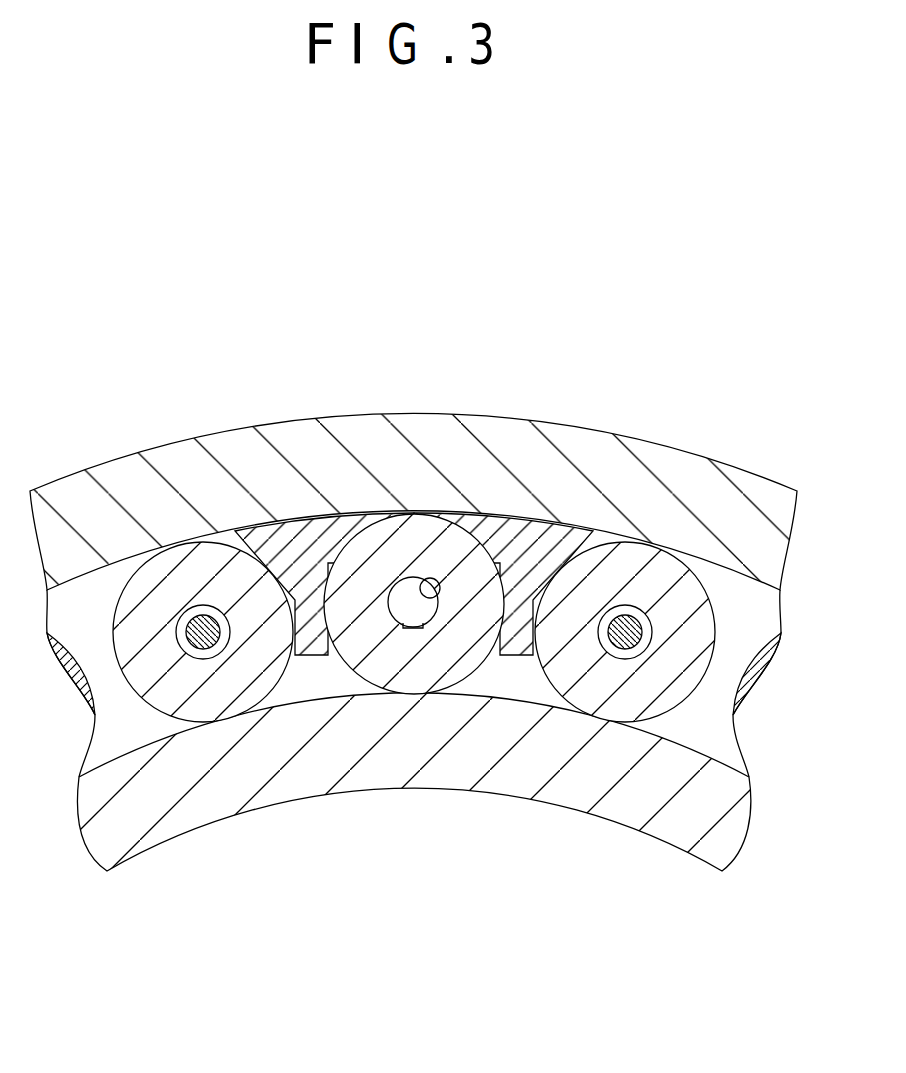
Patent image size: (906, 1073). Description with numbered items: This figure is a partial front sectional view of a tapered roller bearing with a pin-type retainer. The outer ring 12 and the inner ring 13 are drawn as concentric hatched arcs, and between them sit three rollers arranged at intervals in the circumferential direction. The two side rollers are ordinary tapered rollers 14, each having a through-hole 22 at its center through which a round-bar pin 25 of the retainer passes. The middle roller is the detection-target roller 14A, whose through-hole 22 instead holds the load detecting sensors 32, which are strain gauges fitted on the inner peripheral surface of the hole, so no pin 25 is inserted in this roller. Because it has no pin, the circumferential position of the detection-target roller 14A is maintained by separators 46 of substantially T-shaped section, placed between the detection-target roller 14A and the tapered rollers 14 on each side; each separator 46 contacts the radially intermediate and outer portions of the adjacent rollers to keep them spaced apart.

The outer ring 12 is at (423, 412).
The inner ring 13 is at (308, 800).
The tapered roller 14 is at (198, 710).
The detection-target roller 14A is at (417, 675).
The through-hole 22 is at (440, 587).
The pin 25 is at (178, 628).
The load detecting sensor 32 is at (413, 623).
The separator 46 is at (305, 543).